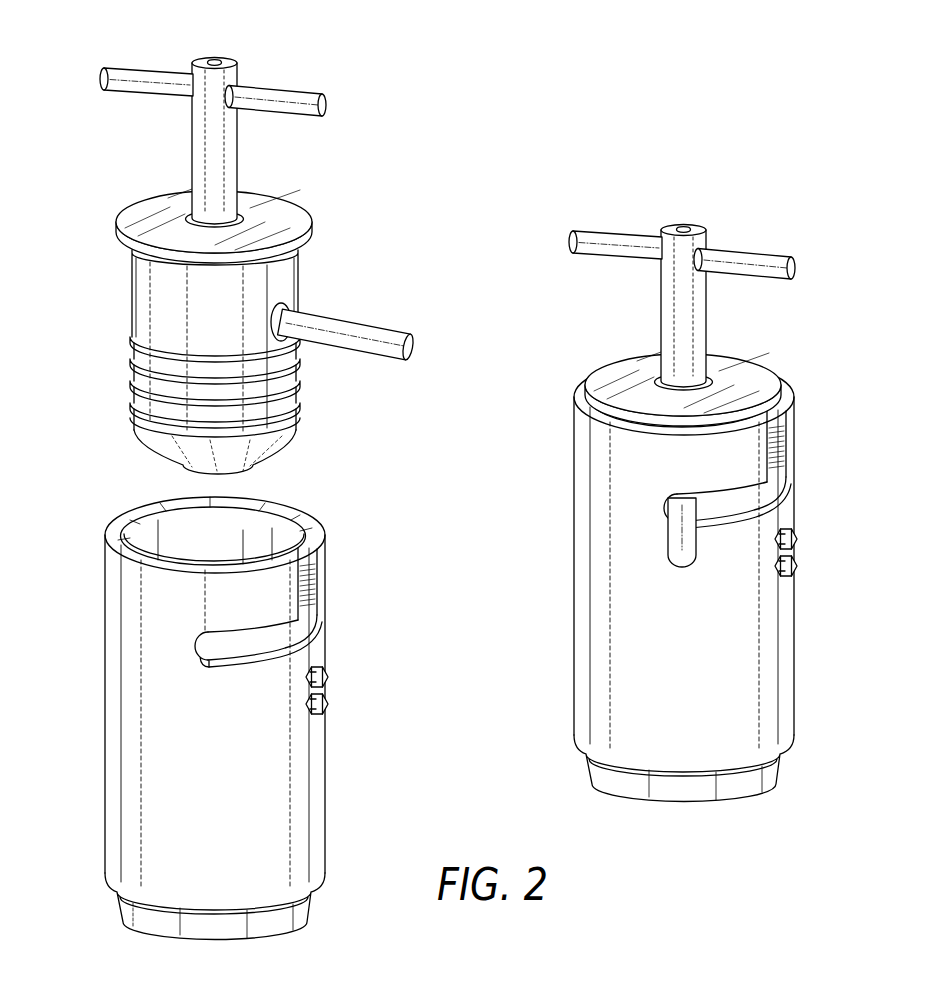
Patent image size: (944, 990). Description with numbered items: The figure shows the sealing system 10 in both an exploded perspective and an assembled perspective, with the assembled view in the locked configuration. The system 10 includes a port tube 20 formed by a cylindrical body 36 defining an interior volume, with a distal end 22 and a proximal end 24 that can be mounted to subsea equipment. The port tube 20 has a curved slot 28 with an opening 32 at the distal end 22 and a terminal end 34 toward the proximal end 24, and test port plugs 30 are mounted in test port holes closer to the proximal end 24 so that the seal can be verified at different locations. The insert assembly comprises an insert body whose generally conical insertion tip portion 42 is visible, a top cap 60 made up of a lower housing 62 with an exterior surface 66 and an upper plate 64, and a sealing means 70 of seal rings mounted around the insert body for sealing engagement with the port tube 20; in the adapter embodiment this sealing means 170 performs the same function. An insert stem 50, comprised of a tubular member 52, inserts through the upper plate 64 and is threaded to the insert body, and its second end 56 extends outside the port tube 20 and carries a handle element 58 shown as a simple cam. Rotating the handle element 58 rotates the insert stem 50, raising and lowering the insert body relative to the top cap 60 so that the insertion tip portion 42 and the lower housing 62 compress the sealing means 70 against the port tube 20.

The system 10 is at (126, 44).
The port tube 20 is at (315, 793).
The distal end 22 is at (286, 512).
The proximal end 24 is at (125, 903).
The curved slot 28 is at (220, 655).
The test port plug 30 is at (331, 680).
The opening 32 is at (313, 562).
The terminal end 34 is at (198, 652).
The cylindrical body 36 is at (120, 780).
The insertion tip portion 42 is at (160, 455).
The insert stem 50 is at (235, 148).
The tubular member 52 is at (200, 160).
The second end 56 is at (229, 60).
The handle element 58 is at (302, 88).
The top cap 60 is at (300, 215).
The lower housing 62 is at (140, 282).
The upper plate 64 is at (133, 207).
The exterior surface 66 is at (143, 312).
The sealing means 70 is at (145, 380).
The sealing means 170 is at (302, 395).